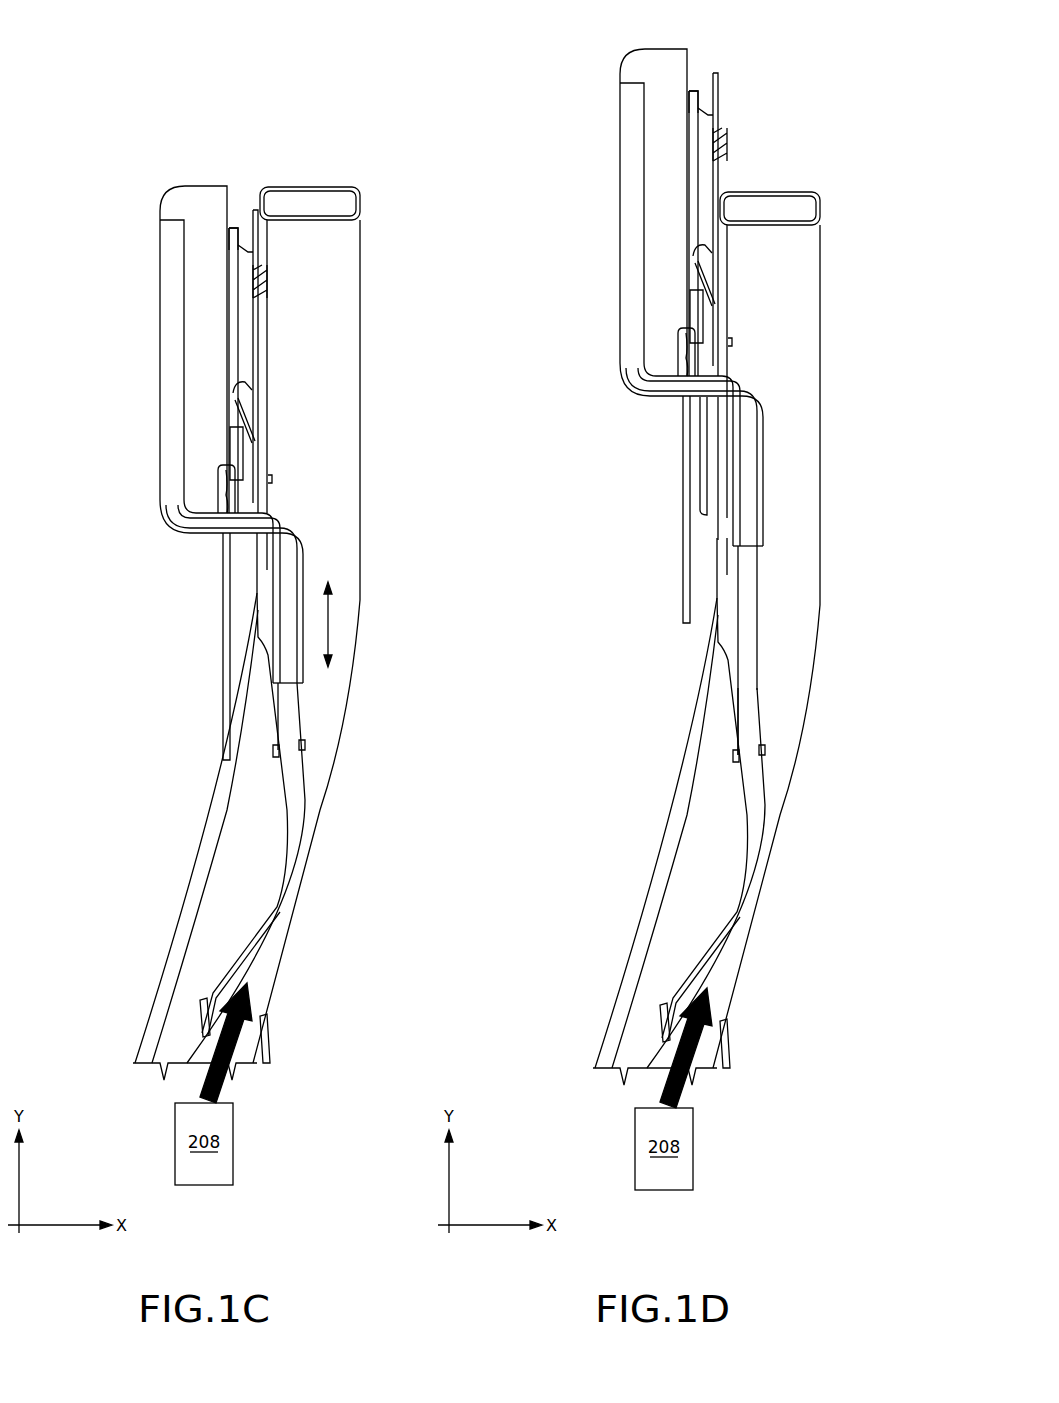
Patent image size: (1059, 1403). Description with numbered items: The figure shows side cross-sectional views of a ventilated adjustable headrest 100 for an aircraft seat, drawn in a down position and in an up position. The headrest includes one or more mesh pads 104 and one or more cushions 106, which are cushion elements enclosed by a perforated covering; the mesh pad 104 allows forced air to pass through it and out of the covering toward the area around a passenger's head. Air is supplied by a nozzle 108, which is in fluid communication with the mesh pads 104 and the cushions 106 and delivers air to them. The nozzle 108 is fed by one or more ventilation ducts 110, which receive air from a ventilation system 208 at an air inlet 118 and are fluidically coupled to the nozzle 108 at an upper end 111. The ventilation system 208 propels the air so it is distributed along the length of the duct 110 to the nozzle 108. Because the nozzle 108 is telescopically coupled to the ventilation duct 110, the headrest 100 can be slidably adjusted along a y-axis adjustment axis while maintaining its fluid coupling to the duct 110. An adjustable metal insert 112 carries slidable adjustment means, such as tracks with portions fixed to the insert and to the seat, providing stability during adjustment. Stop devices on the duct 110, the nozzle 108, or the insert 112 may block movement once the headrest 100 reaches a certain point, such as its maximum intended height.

In FIG. 1C, the ventilated adjustable headrest 100 is at (385, 140).
In FIG. 1D, the ventilated adjustable headrest 100 is at (822, 97).
In FIG. 1C, the mesh pad 104 is at (172, 360).
In FIG. 1D, the mesh pad 104 is at (632, 177).
In FIG. 1C, the cushion 106 is at (210, 350).
In FIG. 1D, the cushion 106 is at (673, 165).
In FIG. 1C, the nozzle 108 is at (198, 525).
In FIG. 1D, the nozzle 108 is at (657, 393).
In FIG. 1C, the ventilation duct 110 is at (287, 580).
In FIG. 1D, the ventilation duct 110 is at (748, 595).
In FIG. 1C, the upper end 111 is at (287, 537).
In FIG. 1C, the adjustable metal insert 112 is at (232, 228).
In FIG. 1D, the adjustable metal insert 112 is at (700, 110).
In FIG. 1C, the air inlet 118 is at (243, 1017).
In FIG. 1D, the air inlet 118 is at (703, 1022).
In FIG. 1C, the ventilation system 208 is at (213, 1084).
In FIG. 1D, the ventilation system 208 is at (673, 1089).